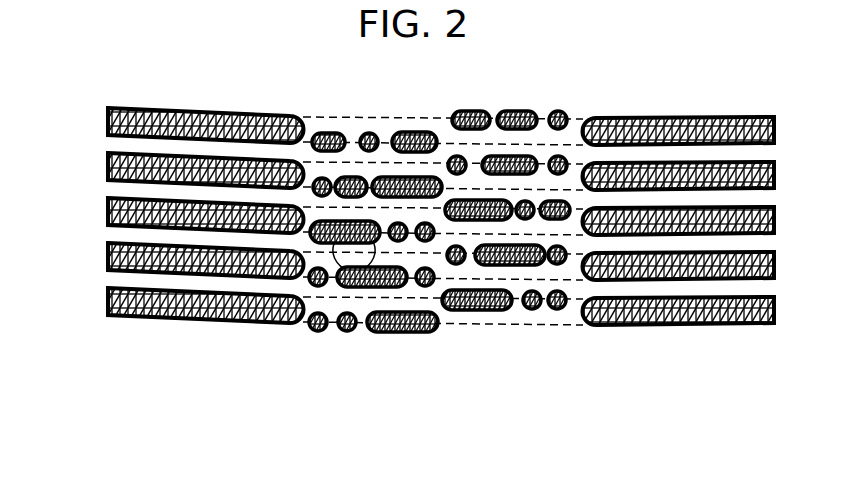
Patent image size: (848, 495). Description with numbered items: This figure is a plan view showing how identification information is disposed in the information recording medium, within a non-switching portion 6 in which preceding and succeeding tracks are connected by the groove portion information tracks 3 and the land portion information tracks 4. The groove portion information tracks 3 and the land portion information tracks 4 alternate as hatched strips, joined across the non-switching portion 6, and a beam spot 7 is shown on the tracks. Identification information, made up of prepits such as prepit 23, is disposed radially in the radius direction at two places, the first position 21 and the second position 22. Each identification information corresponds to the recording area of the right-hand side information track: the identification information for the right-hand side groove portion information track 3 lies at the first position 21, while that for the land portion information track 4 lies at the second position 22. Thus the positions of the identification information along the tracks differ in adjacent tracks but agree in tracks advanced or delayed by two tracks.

The groove portion 3 is at (108, 113).
The land portion 4 is at (115, 143).
The non-switching portion 6 is at (431, 266).
The beam spot 7 is at (352, 257).
The identification information disposed at a first position 21 is at (375, 233).
The identification information disposed at a second position 22 is at (506, 253).
The prepit 23 is at (417, 130).